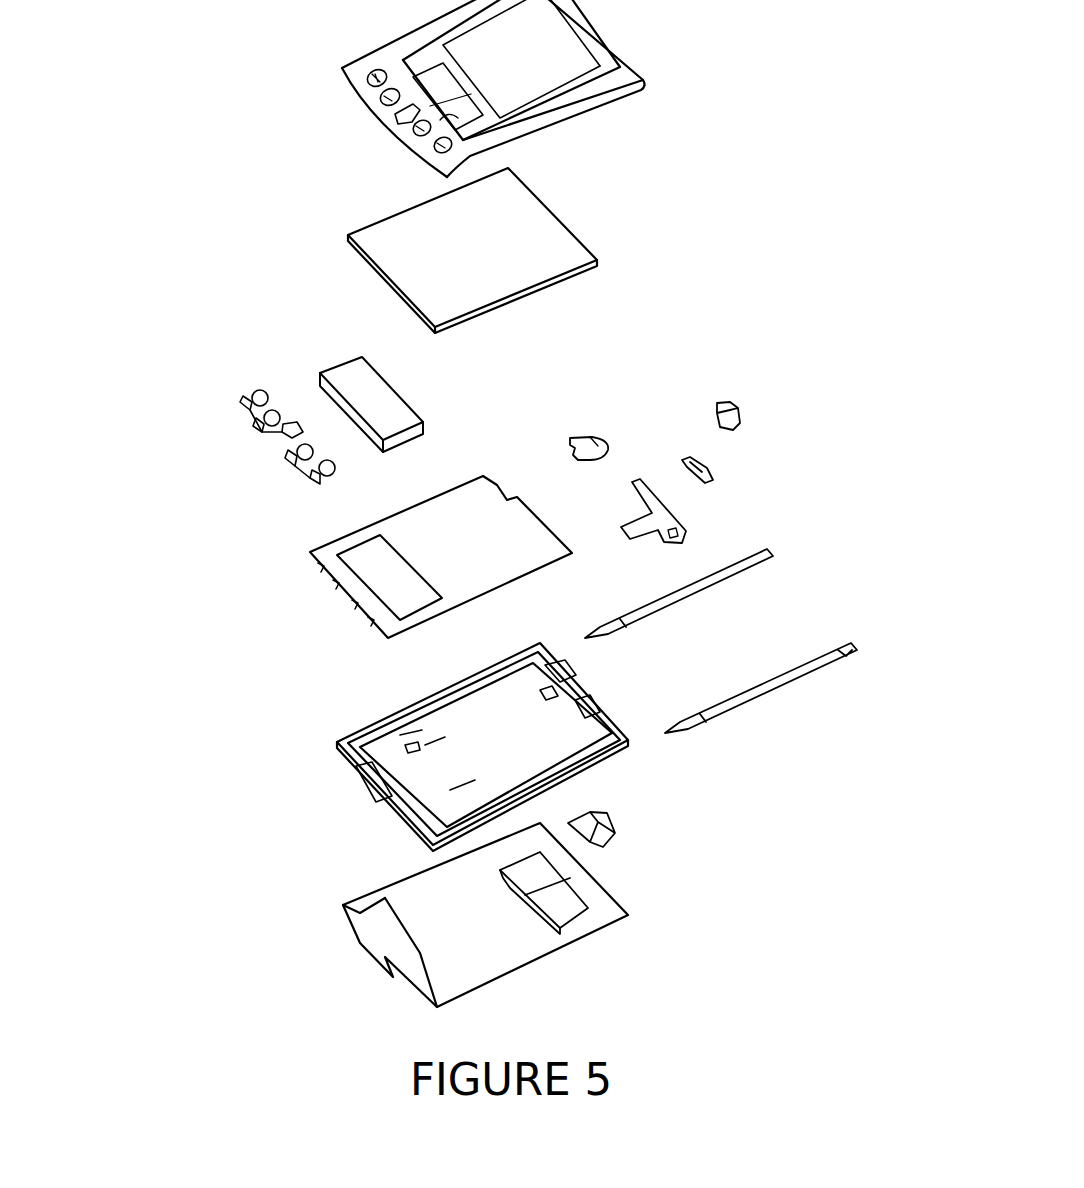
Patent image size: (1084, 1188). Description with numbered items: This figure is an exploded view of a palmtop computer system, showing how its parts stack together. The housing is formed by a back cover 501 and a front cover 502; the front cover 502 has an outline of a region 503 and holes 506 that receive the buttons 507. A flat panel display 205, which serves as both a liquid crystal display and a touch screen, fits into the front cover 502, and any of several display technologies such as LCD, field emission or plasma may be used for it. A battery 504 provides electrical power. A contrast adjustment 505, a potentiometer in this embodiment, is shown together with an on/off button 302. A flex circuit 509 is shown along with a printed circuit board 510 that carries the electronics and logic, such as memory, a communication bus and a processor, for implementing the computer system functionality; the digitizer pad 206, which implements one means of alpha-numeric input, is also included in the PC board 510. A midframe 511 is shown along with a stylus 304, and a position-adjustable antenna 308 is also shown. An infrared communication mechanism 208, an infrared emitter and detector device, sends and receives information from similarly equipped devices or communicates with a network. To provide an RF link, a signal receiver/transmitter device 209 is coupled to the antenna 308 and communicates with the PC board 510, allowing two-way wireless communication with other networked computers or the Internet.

The front cover 502 is at (628, 70).
The region 503 is at (437, 85).
The holes 506 is at (377, 88).
The flat panel display 205 is at (550, 233).
The battery 504 is at (342, 382).
The buttons 507 is at (283, 457).
The contrast adjustment 505 is at (597, 437).
The on/off button 302 is at (738, 412).
The infrared communication mechanism 208 is at (707, 463).
The flex circuit 509 is at (687, 530).
The digitizer pad 206 is at (372, 558).
The printed circuit board 510 is at (348, 585).
The position-adjustable antenna 308 is at (742, 567).
The stylus 304 is at (827, 658).
The midframe 511 is at (363, 792).
The receiver/transmitter device 209 is at (612, 825).
The back cover 501 is at (563, 937).